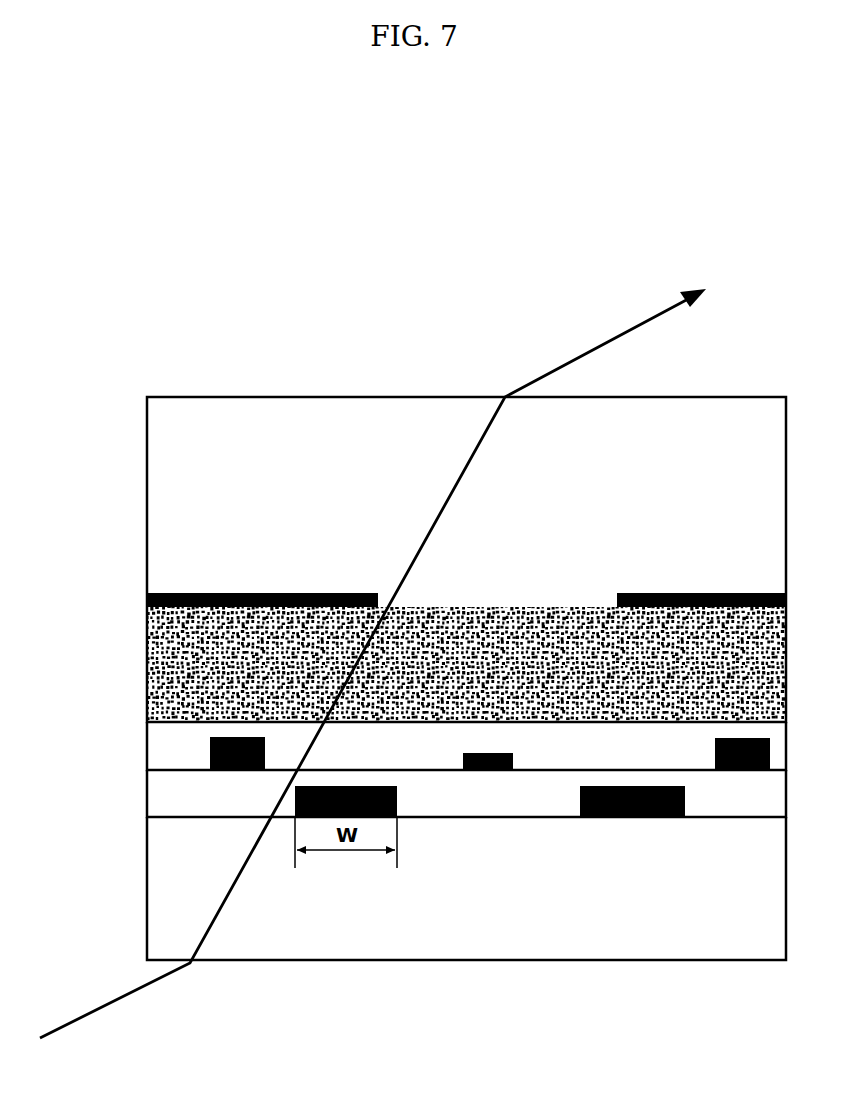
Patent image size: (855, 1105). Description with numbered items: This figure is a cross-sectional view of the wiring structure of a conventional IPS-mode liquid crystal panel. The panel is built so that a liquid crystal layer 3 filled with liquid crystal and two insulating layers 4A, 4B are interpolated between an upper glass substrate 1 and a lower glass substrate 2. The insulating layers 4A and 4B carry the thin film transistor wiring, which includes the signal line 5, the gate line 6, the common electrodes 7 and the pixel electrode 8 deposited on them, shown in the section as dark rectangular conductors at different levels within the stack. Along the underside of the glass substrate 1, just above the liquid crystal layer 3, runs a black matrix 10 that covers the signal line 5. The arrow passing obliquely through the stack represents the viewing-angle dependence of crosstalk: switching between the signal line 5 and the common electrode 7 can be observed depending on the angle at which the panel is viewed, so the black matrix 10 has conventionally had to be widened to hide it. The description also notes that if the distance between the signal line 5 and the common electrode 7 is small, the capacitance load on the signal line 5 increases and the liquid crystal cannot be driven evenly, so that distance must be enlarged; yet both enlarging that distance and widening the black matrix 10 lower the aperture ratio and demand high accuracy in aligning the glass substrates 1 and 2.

The glass substrate 1 is at (163, 500).
The glass substrate 2 is at (160, 887).
The liquid crystal layer 3 is at (160, 660).
The insulating layer 4A is at (160, 745).
The insulating layer 4B is at (160, 793).
The signal line 5 is at (748, 738).
The gate line 6 is at (243, 737).
The common electrode 7 is at (348, 786).
The pixel electrode 8 is at (490, 753).
The black matrix 10 is at (277, 592).